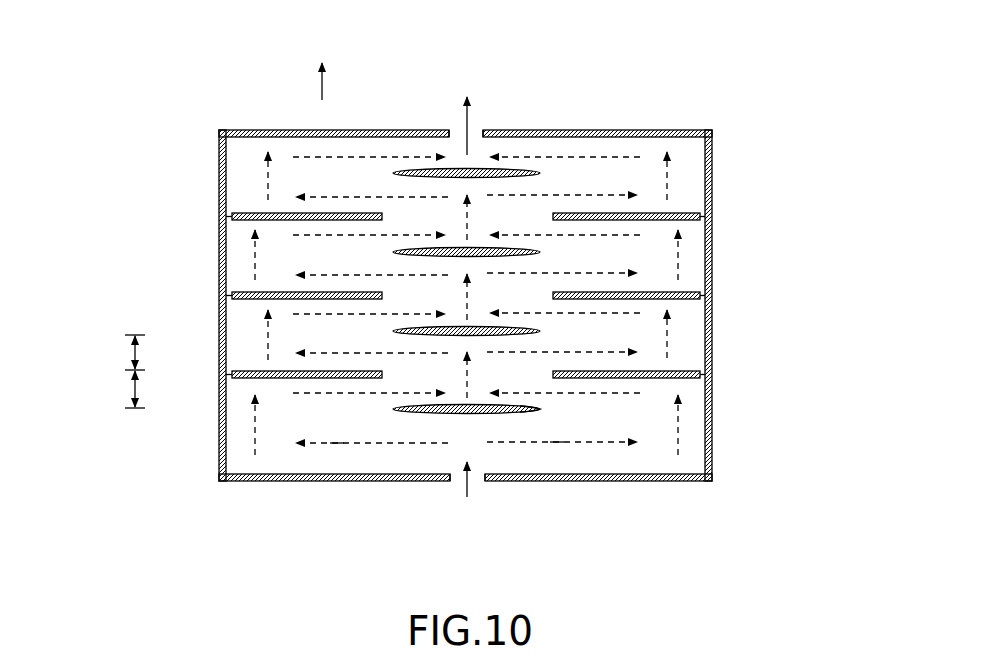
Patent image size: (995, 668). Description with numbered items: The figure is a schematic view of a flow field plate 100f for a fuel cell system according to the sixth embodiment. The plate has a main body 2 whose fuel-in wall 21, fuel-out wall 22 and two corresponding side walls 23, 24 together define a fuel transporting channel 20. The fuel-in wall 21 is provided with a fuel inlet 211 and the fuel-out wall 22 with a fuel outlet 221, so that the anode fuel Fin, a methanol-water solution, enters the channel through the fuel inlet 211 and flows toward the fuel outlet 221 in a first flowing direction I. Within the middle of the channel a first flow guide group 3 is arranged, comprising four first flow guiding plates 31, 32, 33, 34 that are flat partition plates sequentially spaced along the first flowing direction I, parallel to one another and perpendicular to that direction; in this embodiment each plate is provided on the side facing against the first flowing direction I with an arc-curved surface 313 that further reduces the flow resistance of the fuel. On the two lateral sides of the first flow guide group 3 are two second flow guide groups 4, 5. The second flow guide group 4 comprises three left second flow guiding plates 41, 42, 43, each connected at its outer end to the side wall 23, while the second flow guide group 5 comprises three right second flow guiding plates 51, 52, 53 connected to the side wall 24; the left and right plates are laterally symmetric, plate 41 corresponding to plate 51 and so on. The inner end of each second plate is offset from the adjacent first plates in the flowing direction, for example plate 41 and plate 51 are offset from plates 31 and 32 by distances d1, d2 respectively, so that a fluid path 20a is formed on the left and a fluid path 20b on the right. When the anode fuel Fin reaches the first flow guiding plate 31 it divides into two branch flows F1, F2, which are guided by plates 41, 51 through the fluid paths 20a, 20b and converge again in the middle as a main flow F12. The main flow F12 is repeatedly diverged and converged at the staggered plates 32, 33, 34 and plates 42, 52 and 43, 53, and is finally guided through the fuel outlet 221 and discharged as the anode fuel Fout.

The flow field plate 100f is at (704, 90).
The main body 2 is at (712, 140).
The fuel transporting channel 20 is at (548, 150).
The fluid path 20a is at (372, 258).
The fluid path 20b is at (560, 263).
The fuel-in wall 21 is at (617, 481).
The fuel inlet 211 is at (483, 478).
The fuel-out wall 22 is at (608, 128).
The fuel outlet 221 is at (483, 128).
The side wall 23 is at (220, 168).
The side wall 24 is at (712, 196).
The first flow guide group 3 is at (413, 418).
The first flow guiding plate 31 is at (540, 409).
The first flow guiding plate 32 is at (540, 331).
The first flow guiding plate 33 is at (540, 252).
The first flow guiding plate 34 is at (540, 173).
The arc-curved surface 313 is at (456, 420).
The second flow guide group 4 is at (245, 381).
The left second flow guiding plate 41 is at (220, 373).
The left second flow guiding plate 42 is at (220, 295).
The left second flow guiding plate 43 is at (220, 215).
The second flow guide group 5 is at (688, 381).
The right second flow guiding plate 51 is at (700, 373).
The right second flow guiding plate 52 is at (700, 294).
The right second flow guiding plate 53 is at (700, 215).
The branch flow F1 is at (337, 443).
The branch flow F2 is at (557, 443).
The main flow F12 is at (470, 368).
The anode fuel Fin is at (465, 490).
The anode fuel Fout is at (463, 120).
The first flowing direction I is at (320, 95).
The distance d1 is at (122, 389).
The distance d2 is at (122, 352).